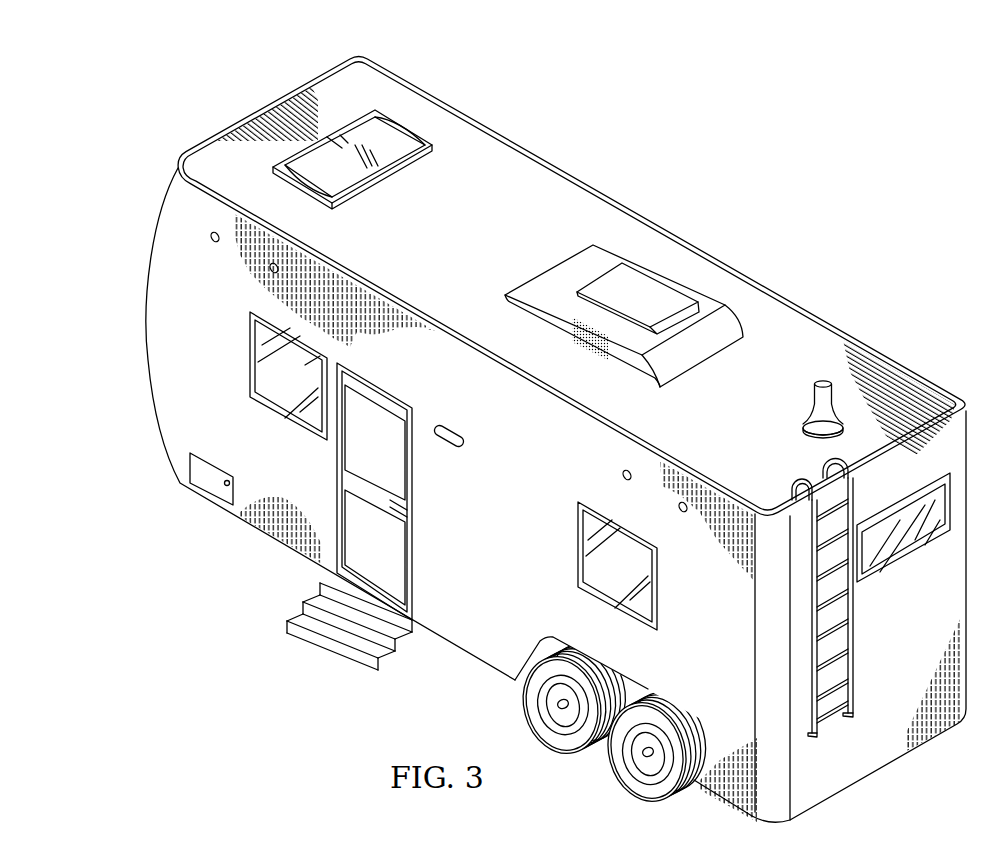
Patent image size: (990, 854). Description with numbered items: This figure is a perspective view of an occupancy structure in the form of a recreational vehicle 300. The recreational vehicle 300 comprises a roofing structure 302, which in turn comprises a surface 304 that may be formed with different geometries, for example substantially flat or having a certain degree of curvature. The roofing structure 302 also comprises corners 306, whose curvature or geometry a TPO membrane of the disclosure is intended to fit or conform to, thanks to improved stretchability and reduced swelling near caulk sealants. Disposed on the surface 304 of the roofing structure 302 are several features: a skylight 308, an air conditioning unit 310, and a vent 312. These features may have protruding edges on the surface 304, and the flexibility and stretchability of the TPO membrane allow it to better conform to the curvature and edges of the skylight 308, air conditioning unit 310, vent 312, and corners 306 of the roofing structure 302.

The recreational vehicle 300 is at (556, 440).
The roofing structure 302 is at (577, 213).
The surface 304 is at (628, 222).
The corners 306 is at (922, 392).
The skylight 308 is at (392, 148).
The air conditioning unit 310 is at (673, 280).
The vent 312 is at (813, 405).